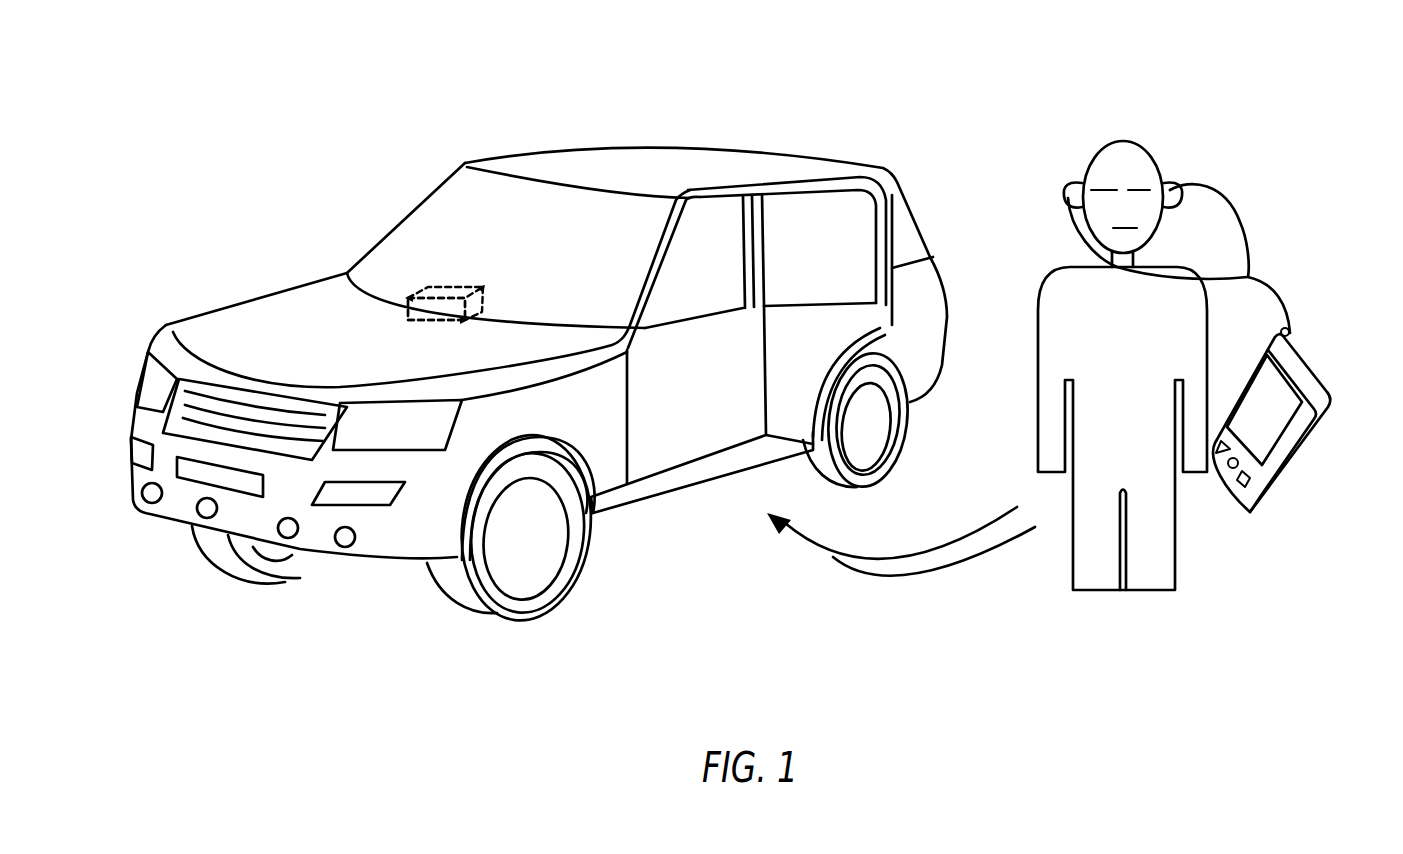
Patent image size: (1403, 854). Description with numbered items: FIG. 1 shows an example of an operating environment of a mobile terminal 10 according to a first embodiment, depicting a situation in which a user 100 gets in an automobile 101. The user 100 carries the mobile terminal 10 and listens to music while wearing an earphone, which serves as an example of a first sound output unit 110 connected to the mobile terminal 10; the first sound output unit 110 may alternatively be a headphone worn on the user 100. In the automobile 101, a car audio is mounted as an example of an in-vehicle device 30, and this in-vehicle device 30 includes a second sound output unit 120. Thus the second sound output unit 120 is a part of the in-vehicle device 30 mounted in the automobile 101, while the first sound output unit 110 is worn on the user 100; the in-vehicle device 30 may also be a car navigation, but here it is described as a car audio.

The mobile terminal 10 is at (1332, 394).
The in-vehicle device 30 is at (430, 288).
The second sound output unit 120 is at (436, 309).
The user 100 is at (1122, 591).
The automobile 101 is at (790, 153).
The first sound output unit 110 is at (1268, 184).